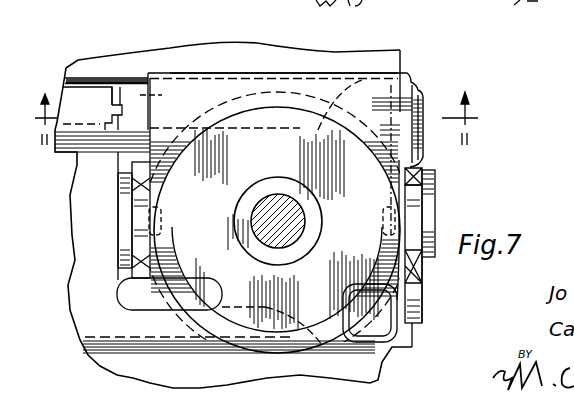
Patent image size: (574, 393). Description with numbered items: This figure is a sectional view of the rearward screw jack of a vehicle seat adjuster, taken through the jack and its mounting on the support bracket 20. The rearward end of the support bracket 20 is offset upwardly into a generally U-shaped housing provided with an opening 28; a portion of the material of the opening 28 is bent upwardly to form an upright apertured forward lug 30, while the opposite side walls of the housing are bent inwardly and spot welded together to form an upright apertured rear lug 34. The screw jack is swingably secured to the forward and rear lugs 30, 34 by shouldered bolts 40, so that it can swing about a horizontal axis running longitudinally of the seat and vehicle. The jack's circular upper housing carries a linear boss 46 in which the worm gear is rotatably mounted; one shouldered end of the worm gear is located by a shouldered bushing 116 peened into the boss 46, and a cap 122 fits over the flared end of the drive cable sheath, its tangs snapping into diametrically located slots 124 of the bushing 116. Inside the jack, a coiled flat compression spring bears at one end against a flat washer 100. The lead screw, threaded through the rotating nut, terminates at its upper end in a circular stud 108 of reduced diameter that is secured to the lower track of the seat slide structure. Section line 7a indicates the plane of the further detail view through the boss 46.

The support bracket 20 is at (392, 63).
The opening 28 is at (262, 128).
The upright apertured forward lug 30 is at (138, 270).
The upright apertured rear lug 34 is at (415, 163).
The shouldered bolts 40 is at (120, 212).
The linear boss 46 is at (234, 72).
The section line 7a is at (262, 105).
The flat washer 100 is at (350, 285).
The circular stud 108 is at (252, 240).
The shouldered bushing 116 is at (148, 112).
The cap 122 is at (82, 95).
The slots 124 is at (113, 103).